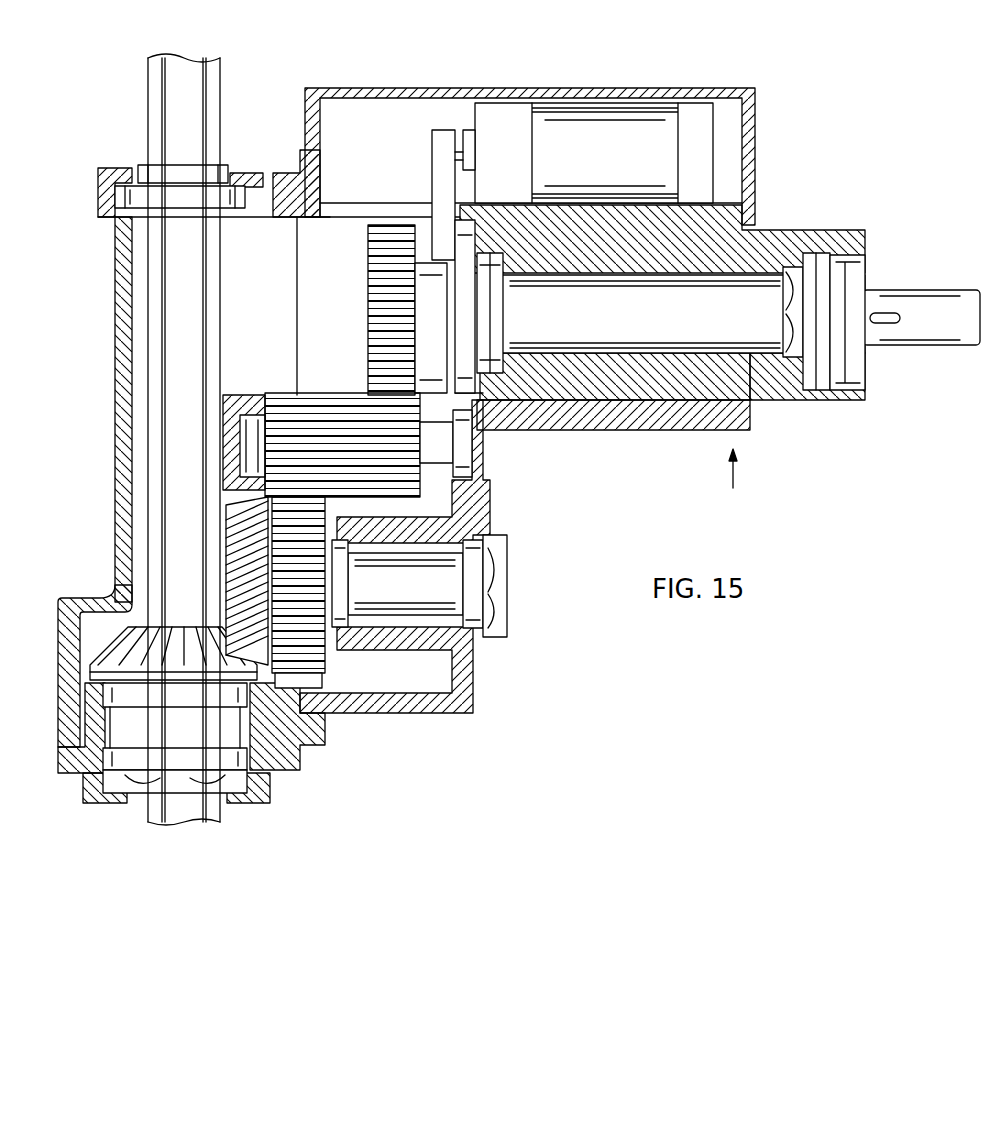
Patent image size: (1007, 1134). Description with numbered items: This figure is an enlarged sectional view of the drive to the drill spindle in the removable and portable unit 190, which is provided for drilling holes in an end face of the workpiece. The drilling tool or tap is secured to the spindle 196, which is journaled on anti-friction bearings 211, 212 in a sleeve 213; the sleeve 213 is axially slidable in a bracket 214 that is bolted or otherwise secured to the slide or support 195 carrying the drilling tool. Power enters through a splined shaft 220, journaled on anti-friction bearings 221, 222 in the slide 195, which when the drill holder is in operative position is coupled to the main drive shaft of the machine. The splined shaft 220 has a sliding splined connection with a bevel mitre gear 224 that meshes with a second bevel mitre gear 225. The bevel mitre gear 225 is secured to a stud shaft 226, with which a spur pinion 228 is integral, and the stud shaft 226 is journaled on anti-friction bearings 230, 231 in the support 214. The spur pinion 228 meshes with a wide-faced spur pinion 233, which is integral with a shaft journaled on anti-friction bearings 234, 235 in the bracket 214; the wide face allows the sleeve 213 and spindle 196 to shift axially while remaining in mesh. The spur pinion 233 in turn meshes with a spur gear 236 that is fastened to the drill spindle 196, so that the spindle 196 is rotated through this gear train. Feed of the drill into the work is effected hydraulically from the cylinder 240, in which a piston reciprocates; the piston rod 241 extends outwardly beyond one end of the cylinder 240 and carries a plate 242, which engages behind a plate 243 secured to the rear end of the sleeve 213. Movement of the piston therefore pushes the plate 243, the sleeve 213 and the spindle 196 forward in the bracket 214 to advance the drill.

The removable and portable unit 190 is at (736, 478).
The support 195 is at (118, 320).
The spindle 196 is at (919, 292).
The anti-friction bearing 211 is at (490, 378).
The anti-friction bearing 212 is at (836, 258).
The sleeve 213 is at (773, 400).
The bracket 214 is at (586, 425).
The splined shaft 220 is at (222, 347).
The anti-friction bearing 221 is at (290, 738).
The anti-friction bearing 222 is at (250, 172).
The bevel mitre gear 224 is at (112, 640).
The bevel mitre gear 225 is at (238, 525).
The stud shaft 226 is at (407, 615).
The spur pinion 228 is at (318, 678).
The anti-friction bearing 230 is at (345, 628).
The anti-friction bearing 231 is at (475, 650).
The wide-faced spur pinion 233 is at (338, 395).
The anti-friction bearing 234 is at (252, 413).
The anti-friction bearing 235 is at (475, 485).
The spur gear 236 is at (368, 263).
The cylinder 240 is at (620, 102).
The piston rod 241 is at (464, 131).
The plate 242 is at (436, 177).
The plate 243 is at (456, 378).